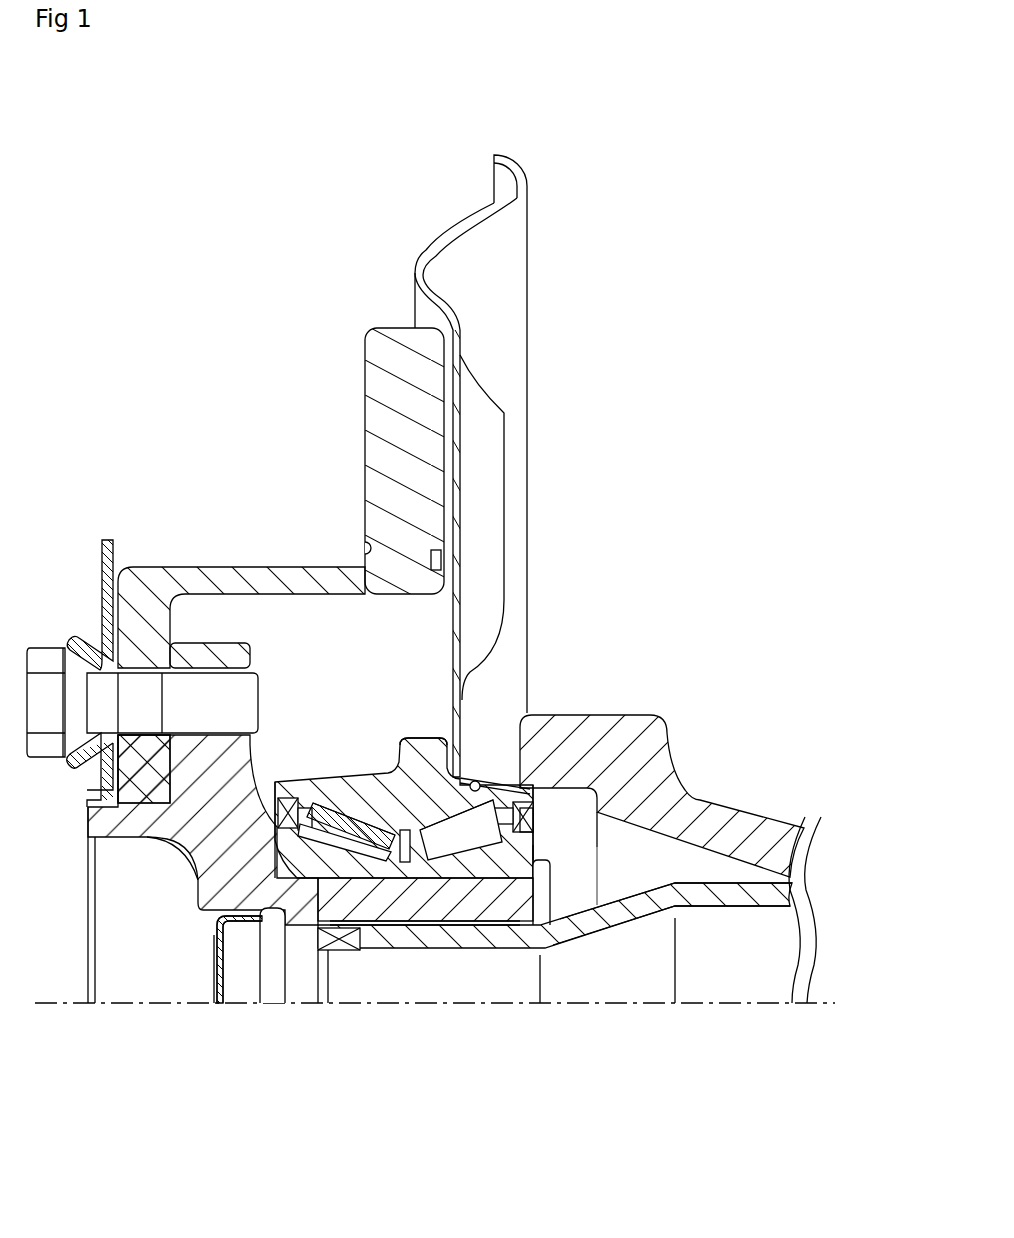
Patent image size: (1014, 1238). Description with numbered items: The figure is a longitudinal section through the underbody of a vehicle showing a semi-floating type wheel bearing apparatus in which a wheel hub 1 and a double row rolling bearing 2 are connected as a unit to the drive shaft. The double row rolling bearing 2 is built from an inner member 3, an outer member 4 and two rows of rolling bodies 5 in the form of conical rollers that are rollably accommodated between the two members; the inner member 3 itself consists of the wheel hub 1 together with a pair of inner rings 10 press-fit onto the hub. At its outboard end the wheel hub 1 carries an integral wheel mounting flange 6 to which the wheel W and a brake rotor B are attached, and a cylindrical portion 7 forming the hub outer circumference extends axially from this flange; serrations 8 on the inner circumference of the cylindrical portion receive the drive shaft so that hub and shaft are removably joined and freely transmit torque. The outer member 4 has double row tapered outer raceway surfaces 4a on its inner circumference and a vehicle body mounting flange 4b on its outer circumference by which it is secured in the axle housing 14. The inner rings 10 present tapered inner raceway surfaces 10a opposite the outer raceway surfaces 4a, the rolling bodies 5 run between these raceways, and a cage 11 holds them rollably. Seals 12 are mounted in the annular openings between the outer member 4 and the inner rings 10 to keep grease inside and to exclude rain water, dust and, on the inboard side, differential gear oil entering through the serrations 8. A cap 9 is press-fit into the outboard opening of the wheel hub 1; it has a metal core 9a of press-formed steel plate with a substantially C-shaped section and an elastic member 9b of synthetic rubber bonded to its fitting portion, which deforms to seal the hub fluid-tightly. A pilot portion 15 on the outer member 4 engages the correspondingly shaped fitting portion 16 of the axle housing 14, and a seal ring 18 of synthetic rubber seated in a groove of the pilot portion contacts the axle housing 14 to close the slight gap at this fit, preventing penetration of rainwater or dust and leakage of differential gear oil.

The wheel hub 1 is at (168, 842).
The double row rolling bearing 2 is at (376, 752).
The inner member 3 is at (352, 860).
The outer member 4 is at (348, 792).
The outer raceway surfaces 4a is at (316, 808).
The vehicle body mounting flange 4b is at (408, 745).
The rolling bodies 5 is at (205, 878).
The wheel mounting flange 6 is at (205, 660).
The cylindrical portion 7 is at (428, 927).
The serrations 8 is at (492, 920).
The cap 9 is at (230, 1085).
The metal core 9a is at (215, 960).
The elastic member 9b is at (213, 957).
The inner rings 10 is at (287, 885).
The inner raceway surfaces 10a is at (320, 862).
The cage 11 is at (400, 922).
The seals 12 is at (278, 812).
The axle housing 14 is at (587, 720).
The pilot portion 15 is at (528, 785).
The fitting portion 16 is at (500, 795).
The seal ring 18 is at (473, 782).
The brake rotor B is at (388, 424).
The wheel W is at (102, 548).